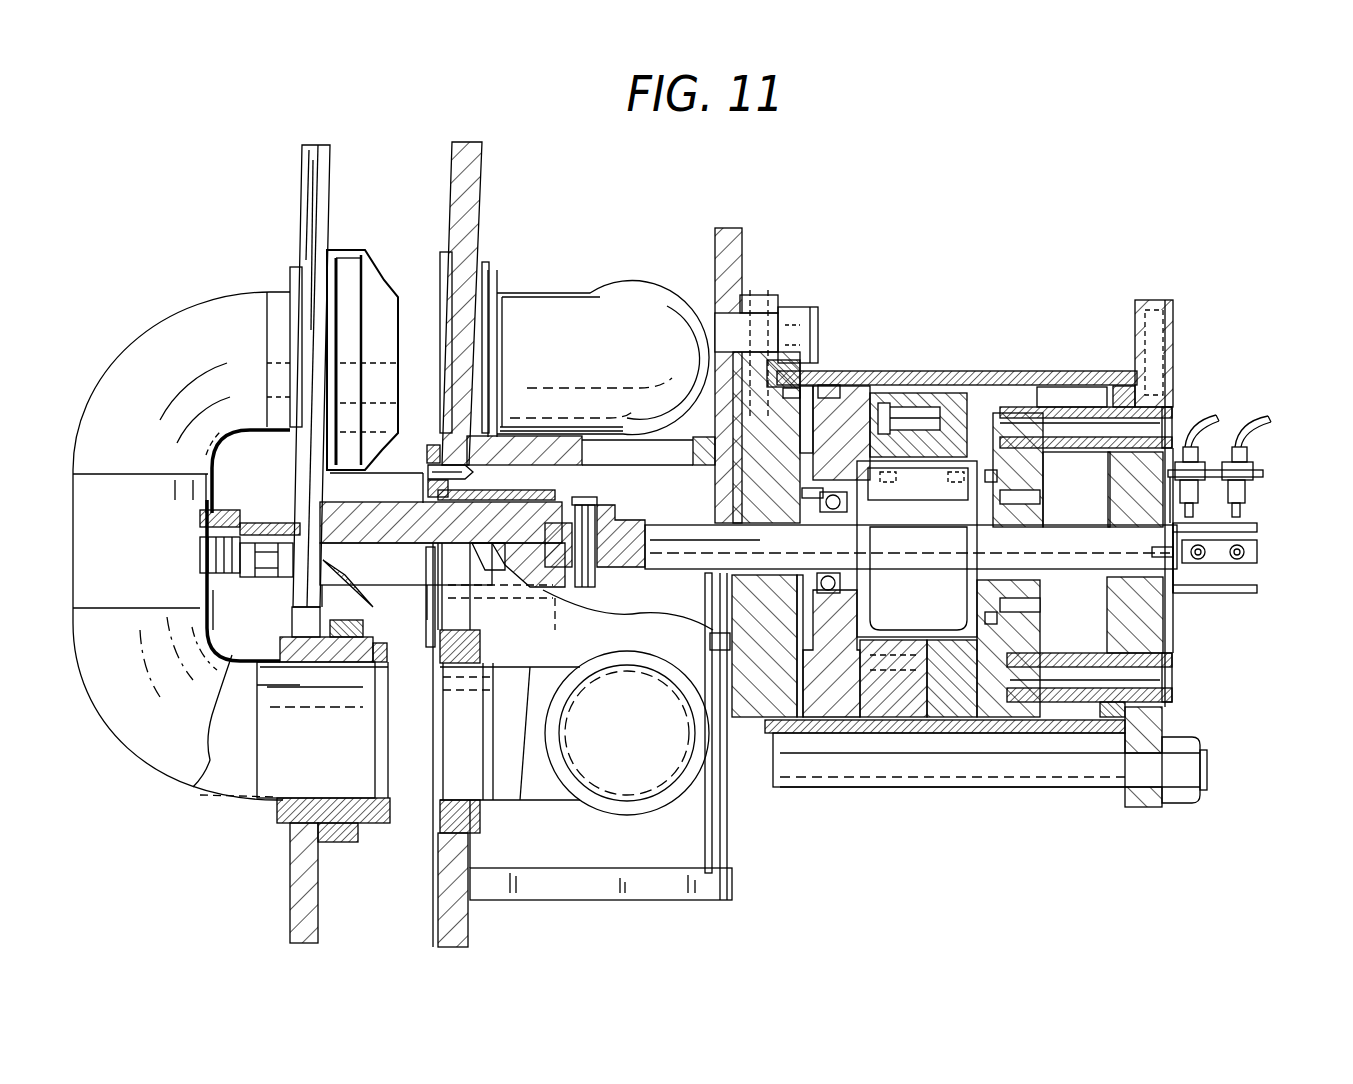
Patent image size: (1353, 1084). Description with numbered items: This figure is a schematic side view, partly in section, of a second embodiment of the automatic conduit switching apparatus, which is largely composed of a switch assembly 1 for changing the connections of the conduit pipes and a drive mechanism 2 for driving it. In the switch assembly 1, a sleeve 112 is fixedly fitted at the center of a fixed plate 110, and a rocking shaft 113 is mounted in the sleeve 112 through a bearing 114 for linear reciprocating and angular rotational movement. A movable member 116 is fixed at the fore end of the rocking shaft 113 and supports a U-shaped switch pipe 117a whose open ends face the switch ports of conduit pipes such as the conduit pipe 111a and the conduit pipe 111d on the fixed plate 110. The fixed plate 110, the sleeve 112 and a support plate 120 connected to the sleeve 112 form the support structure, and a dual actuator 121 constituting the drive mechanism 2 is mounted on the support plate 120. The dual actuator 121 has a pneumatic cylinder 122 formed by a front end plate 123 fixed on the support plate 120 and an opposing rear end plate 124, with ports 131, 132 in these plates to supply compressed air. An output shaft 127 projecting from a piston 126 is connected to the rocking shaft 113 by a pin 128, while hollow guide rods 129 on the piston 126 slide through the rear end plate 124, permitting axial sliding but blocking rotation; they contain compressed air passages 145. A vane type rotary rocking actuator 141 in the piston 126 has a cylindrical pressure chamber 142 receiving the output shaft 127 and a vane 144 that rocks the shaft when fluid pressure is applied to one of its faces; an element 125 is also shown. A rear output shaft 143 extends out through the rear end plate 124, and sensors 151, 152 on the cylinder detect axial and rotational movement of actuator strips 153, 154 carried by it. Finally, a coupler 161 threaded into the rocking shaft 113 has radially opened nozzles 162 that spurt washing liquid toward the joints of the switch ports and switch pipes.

The switch assembly 1 is at (201, 151).
The drive mechanism 2 is at (1009, 156).
The fixed plate 110 is at (483, 153).
The conduit pipe 111a is at (543, 300).
The conduit pipe 111d is at (545, 800).
The sleeve 112 is at (447, 442).
The rocking shaft 113 is at (393, 500).
The bearing 114 is at (423, 548).
The movable member 116 is at (330, 162).
The U-shaped switch pipe 117a is at (125, 372).
The support plate 120 is at (730, 225).
The dual actuator 121 is at (1045, 325).
The pneumatic cylinder 122 is at (1073, 720).
The front end plate 123 is at (770, 675).
The rear end plate 124 is at (1137, 717).
The spacer 125 is at (957, 720).
The piston 126 is at (860, 700).
The output shaft 127 is at (685, 523).
The pin 128 is at (617, 523).
The guide rod 129 is at (1083, 403).
The port 131 is at (765, 300).
The port 132 is at (1155, 310).
The vane type rotary rocking actuator 141 is at (868, 450).
The cylindrical pressure chamber 142 is at (975, 605).
The output shaft 143 is at (1013, 670).
The vane 144 is at (923, 600).
The compressed air passage 145 is at (1145, 430).
The sensor 151 is at (1248, 497).
The sensor 152 is at (1258, 483).
The actuator strip 153 is at (1195, 527).
The actuator strip 154 is at (1230, 593).
The coupler 161 is at (233, 510).
The nozzle 162 is at (330, 560).